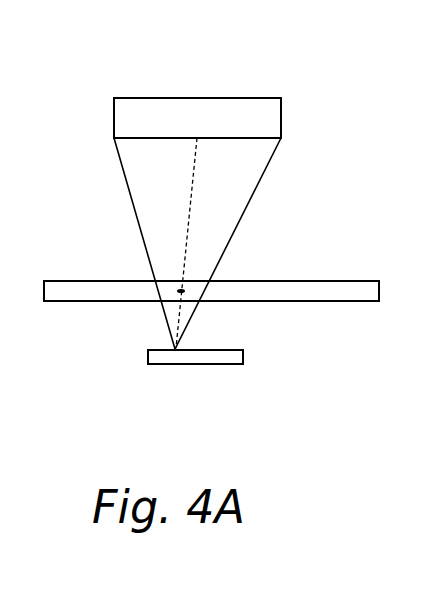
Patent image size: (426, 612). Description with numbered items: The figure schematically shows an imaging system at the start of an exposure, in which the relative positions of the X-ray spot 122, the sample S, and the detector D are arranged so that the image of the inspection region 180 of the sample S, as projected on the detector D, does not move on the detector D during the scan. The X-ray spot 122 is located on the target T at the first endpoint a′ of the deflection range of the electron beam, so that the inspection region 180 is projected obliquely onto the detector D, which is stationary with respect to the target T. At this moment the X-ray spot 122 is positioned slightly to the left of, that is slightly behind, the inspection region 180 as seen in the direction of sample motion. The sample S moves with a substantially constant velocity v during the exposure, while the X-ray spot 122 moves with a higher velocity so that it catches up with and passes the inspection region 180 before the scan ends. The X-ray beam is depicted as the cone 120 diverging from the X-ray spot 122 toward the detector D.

The detector D is at (205, 98).
The light beam cone 120 is at (185, 192).
The inspection region 180 is at (173, 279).
The sample S is at (50, 281).
The velocity v is at (267, 270).
The X-ray spot 122 is at (160, 337).
The target T is at (223, 365).
The first endpoint a′ is at (172, 369).